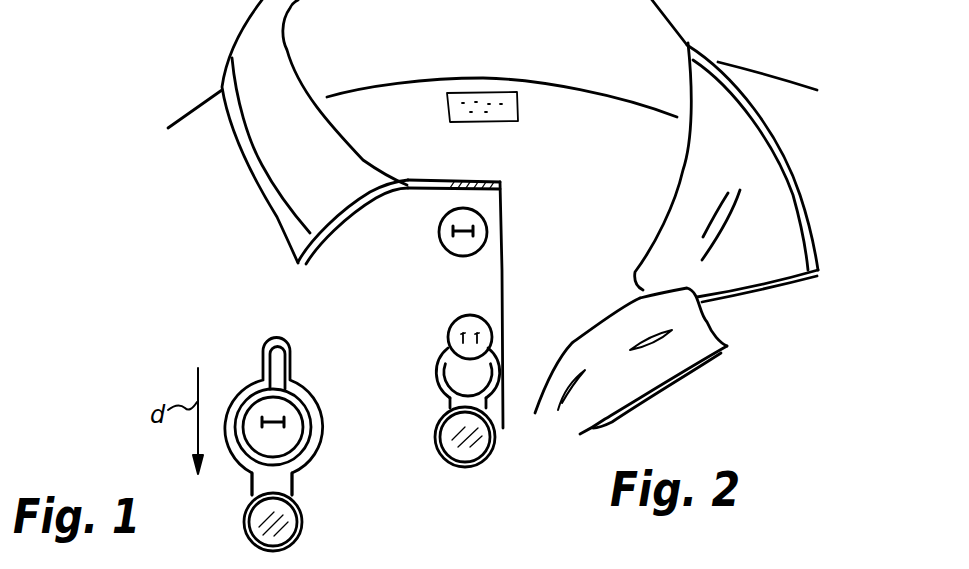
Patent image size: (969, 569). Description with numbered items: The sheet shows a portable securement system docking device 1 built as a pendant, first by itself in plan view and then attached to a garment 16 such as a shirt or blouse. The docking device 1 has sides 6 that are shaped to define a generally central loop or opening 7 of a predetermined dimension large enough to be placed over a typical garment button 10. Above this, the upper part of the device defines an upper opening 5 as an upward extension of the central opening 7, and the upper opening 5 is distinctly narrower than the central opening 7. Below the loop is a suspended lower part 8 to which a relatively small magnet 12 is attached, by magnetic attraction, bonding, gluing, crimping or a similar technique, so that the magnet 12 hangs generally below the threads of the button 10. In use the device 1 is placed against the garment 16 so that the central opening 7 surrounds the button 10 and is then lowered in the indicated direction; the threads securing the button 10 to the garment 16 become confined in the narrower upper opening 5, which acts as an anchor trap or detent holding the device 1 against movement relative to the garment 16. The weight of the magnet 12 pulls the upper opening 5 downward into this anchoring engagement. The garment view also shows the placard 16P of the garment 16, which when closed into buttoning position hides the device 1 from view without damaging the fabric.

In FIG. 1, the portable securement system docking device 1 is at (285, 334).
In FIG. 1, the upper opening 5 is at (277, 370).
In FIG. 1, the sides 6 is at (312, 428).
In FIG. 2, the central loop or opening 7 is at (457, 375).
In FIG. 1, the lower part 8 is at (287, 487).
In FIG. 2, the garment button 10 is at (452, 332).
In FIG. 1, the magnet 12 is at (287, 525).
In FIG. 2, the magnet 12 is at (457, 445).
In FIG. 2, the garment 16 is at (791, 72).
In FIG. 2, the placard 16P is at (690, 336).